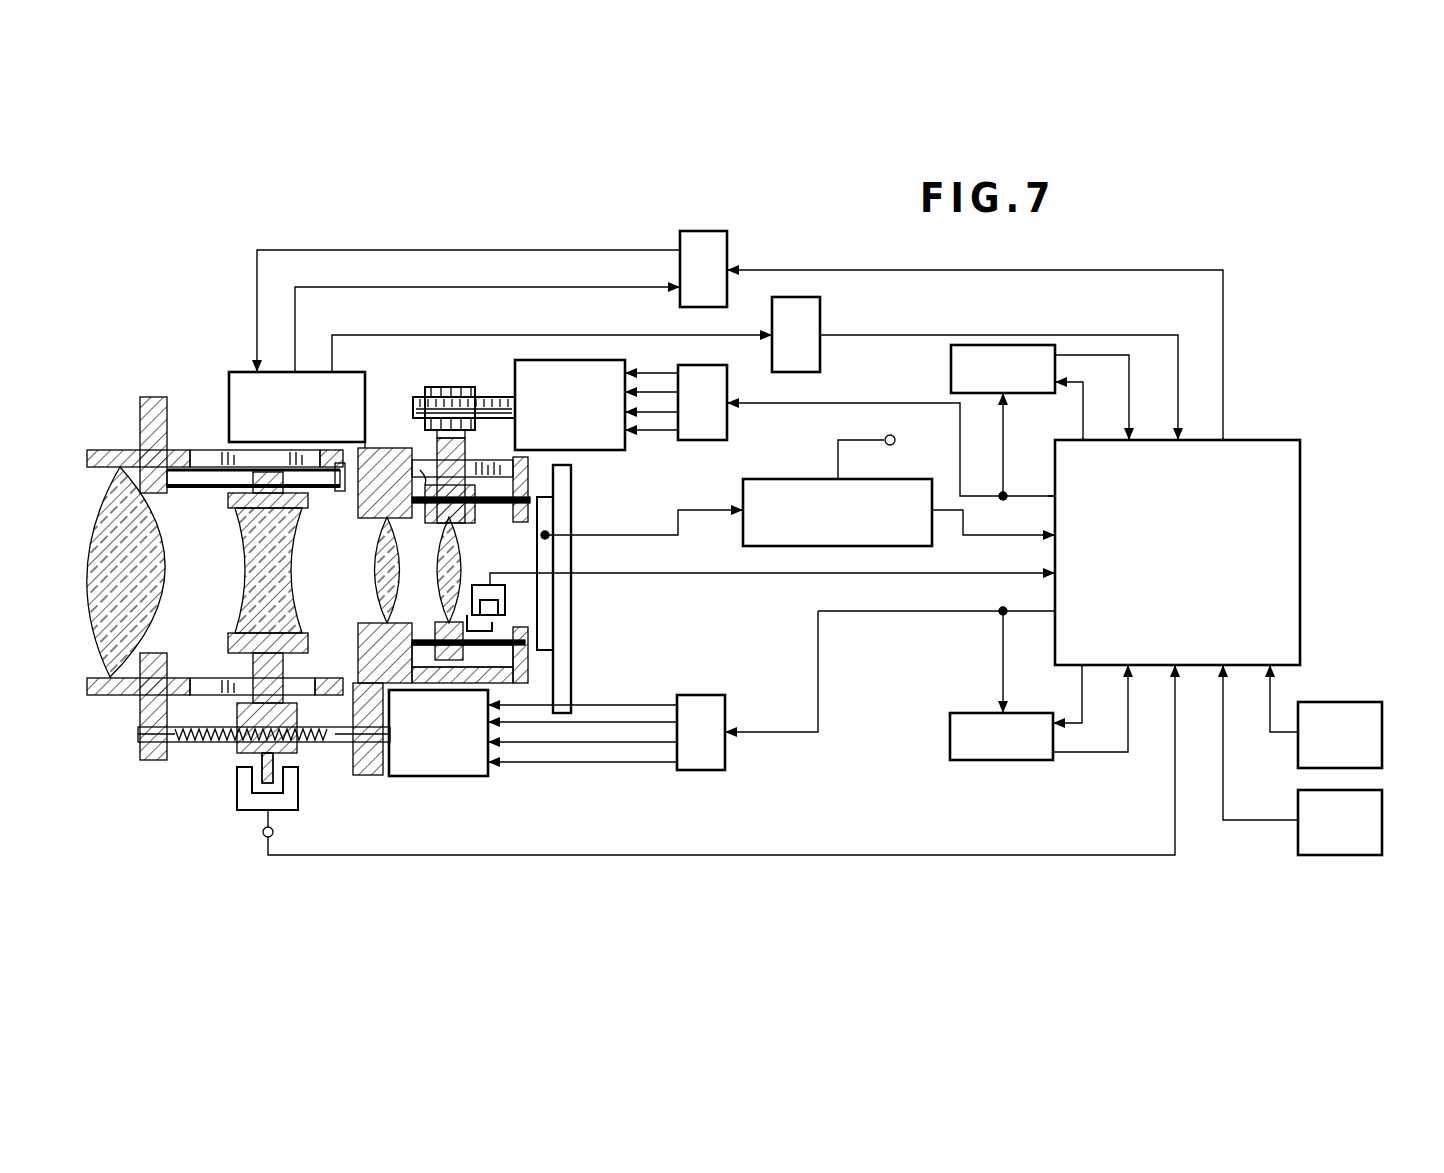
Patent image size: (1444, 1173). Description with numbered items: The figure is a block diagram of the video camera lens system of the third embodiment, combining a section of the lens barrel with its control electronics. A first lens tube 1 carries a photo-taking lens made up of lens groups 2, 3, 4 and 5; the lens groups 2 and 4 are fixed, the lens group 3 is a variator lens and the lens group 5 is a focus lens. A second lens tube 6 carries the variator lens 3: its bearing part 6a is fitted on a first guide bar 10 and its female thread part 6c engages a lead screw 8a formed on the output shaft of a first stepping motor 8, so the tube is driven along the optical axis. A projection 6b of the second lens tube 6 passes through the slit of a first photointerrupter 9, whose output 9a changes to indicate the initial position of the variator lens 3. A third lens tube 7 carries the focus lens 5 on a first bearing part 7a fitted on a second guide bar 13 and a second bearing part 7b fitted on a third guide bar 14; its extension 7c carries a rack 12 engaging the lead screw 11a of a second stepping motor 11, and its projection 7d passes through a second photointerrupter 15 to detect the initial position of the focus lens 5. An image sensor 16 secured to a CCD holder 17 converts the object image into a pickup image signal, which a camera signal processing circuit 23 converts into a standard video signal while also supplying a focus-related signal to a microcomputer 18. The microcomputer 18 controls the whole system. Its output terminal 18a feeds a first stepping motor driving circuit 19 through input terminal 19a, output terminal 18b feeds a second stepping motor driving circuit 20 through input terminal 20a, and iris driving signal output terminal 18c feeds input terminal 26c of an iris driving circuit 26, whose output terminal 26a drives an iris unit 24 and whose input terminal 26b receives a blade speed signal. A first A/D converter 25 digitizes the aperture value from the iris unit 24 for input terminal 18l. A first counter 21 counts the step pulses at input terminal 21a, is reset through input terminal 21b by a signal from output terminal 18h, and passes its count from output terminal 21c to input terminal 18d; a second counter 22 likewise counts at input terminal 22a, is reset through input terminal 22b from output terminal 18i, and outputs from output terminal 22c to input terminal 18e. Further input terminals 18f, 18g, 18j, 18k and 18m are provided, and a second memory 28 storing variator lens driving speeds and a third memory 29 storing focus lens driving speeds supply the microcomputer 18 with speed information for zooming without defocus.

The first lens tube 1 is at (108, 698).
The lens group 2 is at (160, 562).
The variator lens 3 is at (245, 598).
The lens group 4 is at (370, 578).
The focus lens 5 is at (440, 570).
The second lens tube 6 is at (245, 643).
The bearing part 6a is at (255, 510).
The projection 6b is at (268, 785).
The female thread part 6c is at (245, 750).
The third lens tube 7 is at (432, 512).
The first bearing part 7a is at (470, 518).
The second bearing part 7b is at (510, 655).
The extension 7c is at (465, 455).
The projection 7d is at (493, 620).
The first stepping motor 8 is at (461, 768).
The lead screw 8a is at (195, 748).
The first photointerrupter 9 is at (290, 793).
The photo interrupter output 9a is at (275, 834).
The first guide bar 10 is at (210, 470).
The second stepping motor 11 is at (610, 452).
The lead screw 11a is at (497, 397).
The rack screw 12 is at (445, 387).
The second guide bar 13 is at (415, 470).
The third guide bar 14 is at (505, 643).
The second photointerrupter 15 is at (505, 600).
The image sensor 16 is at (545, 557).
The CCD holder 17 is at (562, 497).
The microcomputer 18 is at (1275, 440).
The output terminal 18a is at (956, 611).
The output terminal 18b is at (1071, 496).
The iris driving signal output terminal 18c is at (1223, 453).
The input terminal 18d is at (1129, 653).
The input terminal 18e is at (1129, 449).
The input terminal 18f is at (729, 747).
The input terminal 18g is at (792, 574).
The output terminal 18h is at (1084, 653).
The output terminal 18i is at (1083, 453).
The input terminal 18j is at (1254, 730).
The input terminal 18k is at (1276, 686).
The input terminal 18l is at (1005, 401).
The input terminal 18m is at (1015, 528).
The first stepping motor driving circuit 19 is at (690, 695).
The input terminal 19a is at (738, 722).
The second stepping motor driving circuit 20 is at (705, 440).
The input terminal 20a is at (735, 410).
The first counter 21 is at (945, 749).
The input terminal 21a is at (995, 708).
The input terminal 21b is at (1060, 716).
The output terminal 21c is at (1060, 758).
The second counter 22 is at (945, 369).
The input terminal 22a is at (1000, 400).
The input terminal 22b is at (1060, 400).
The output terminal 22c is at (1060, 357).
The camera signal processing circuit 23 is at (742, 530).
The iris unit 24 is at (244, 380).
The A/D converter 25 is at (822, 312).
The iris driving circuit 26 is at (710, 231).
The output terminal 26a is at (665, 245).
The input terminal 26b is at (665, 282).
The input terminal 26c is at (733, 265).
The second memory 28 is at (1362, 702).
The third memory 29 is at (1362, 855).